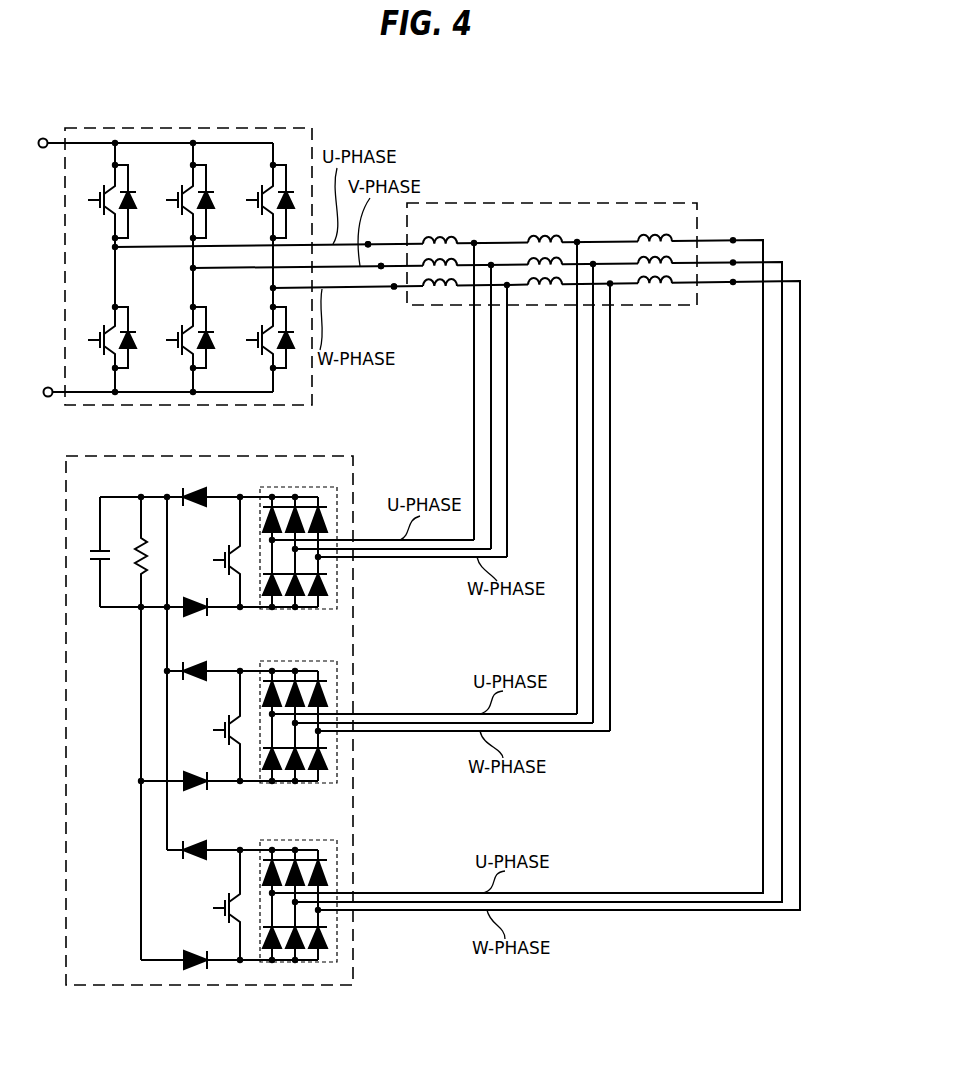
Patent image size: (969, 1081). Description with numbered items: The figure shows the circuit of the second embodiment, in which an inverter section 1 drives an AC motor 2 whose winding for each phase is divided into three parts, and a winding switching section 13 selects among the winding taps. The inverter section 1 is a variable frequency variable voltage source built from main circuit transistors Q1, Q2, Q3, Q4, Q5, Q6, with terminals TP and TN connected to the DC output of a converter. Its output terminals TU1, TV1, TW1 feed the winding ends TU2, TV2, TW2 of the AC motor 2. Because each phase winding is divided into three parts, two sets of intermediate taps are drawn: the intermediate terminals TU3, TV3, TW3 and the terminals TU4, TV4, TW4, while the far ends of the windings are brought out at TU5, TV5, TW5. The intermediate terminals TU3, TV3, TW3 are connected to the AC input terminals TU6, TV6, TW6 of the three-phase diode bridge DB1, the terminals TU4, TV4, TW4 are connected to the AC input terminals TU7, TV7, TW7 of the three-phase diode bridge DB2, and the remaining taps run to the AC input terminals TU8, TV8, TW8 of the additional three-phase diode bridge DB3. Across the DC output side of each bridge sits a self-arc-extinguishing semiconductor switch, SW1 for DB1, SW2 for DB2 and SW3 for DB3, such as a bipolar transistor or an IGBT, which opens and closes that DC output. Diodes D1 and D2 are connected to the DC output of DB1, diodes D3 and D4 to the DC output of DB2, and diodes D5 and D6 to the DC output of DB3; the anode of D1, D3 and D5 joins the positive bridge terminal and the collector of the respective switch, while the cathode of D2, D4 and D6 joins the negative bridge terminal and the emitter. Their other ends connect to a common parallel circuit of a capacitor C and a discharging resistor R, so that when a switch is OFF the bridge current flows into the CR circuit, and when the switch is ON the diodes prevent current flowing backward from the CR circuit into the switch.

The inverter section 1 is at (155, 128).
The AC motor 2 is at (545, 203).
The winding switching section 13 is at (155, 456).
The terminal TP is at (43, 132).
The terminal TN is at (44, 382).
The main circuit transistor Q1 is at (108, 201).
The main circuit transistor Q2 is at (186, 201).
The main circuit transistor Q3 is at (266, 201).
The main circuit transistor Q4 is at (108, 337).
The main circuit transistor Q5 is at (186, 337).
The main circuit transistor Q6 is at (266, 337).
The output terminal TU1 is at (97, 247).
The output terminal TV1 is at (175, 269).
The output terminal TW1 is at (246, 294).
The winding terminal TU2 is at (368, 244).
The winding terminal TV2 is at (381, 268).
The winding terminal TW2 is at (386, 297).
The intermediate terminal TU3 is at (473, 231).
The intermediate terminal TV3 is at (509, 255).
The intermediate terminal TW3 is at (531, 296).
The winding terminal TU4 is at (576, 230).
The winding terminal TV4 is at (610, 255).
The winding terminal TW4 is at (624, 277).
The U-phase winding end terminal TU5 is at (734, 230).
The V-phase winding end terminal TV5 is at (733, 262).
The W-phase winding end terminal TW5 is at (733, 284).
The capacitor C is at (92, 552).
The discharging resistor R is at (127, 728).
The diode D1 is at (197, 486).
The diode D2 is at (197, 596).
The diode D3 is at (197, 659).
The diode D4 is at (197, 770).
The diode D5 is at (197, 837).
The diode D6 is at (197, 950).
The semiconductor switch SW1 is at (209, 560).
The semiconductor switch SW2 is at (209, 730).
The semiconductor switch SW3 is at (209, 908).
The three-phase diode bridge DB1 is at (298, 537).
The three-phase diode bridge DB2 is at (298, 711).
The three-phase diode bridge DB3 is at (298, 889).
The AC input terminal TU6 is at (272, 540).
The AC input terminal TV6 is at (295, 549).
The AC input terminal TW6 is at (318, 557).
The AC input terminal TU7 is at (272, 714).
The AC input terminal TV7 is at (295, 723).
The AC input terminal TW7 is at (318, 731).
The U-phase terminal of diode bridge TU8 is at (272, 893).
The V-phase terminal of diode bridge TV8 is at (295, 902).
The W-phase terminal of diode bridge TW8 is at (318, 910).